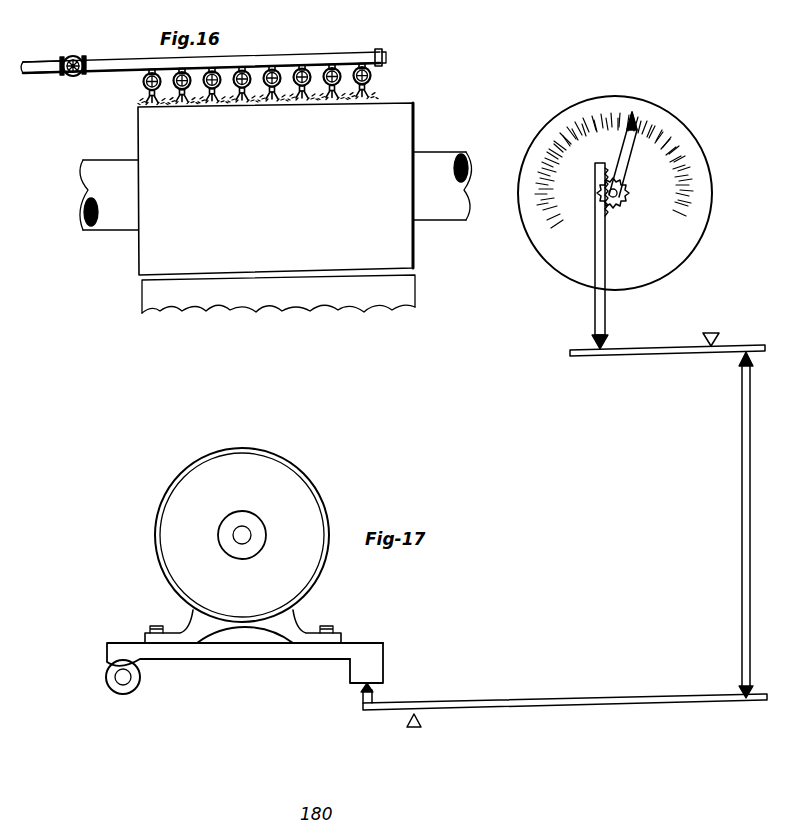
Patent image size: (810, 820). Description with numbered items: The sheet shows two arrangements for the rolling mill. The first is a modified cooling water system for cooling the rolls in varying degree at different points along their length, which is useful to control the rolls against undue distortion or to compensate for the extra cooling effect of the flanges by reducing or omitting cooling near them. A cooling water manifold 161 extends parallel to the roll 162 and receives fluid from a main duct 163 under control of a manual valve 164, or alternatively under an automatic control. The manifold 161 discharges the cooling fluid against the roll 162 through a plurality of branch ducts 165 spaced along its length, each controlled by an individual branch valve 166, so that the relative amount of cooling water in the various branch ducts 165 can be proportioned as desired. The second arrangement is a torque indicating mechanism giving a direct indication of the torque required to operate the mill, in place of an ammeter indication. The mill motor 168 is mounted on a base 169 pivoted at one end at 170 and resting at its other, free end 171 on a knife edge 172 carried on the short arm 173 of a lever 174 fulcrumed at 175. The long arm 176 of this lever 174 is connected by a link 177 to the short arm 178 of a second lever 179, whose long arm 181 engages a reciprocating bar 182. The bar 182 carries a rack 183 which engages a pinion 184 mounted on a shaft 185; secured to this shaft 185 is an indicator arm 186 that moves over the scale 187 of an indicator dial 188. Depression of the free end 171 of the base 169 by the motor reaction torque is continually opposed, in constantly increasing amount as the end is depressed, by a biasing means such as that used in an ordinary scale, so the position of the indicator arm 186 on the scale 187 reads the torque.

In FIG. 16, the cooling water manifold 161 is at (353, 58).
In FIG. 16, the roll 162 is at (395, 137).
In FIG. 16, the main duct 163 is at (38, 62).
In FIG. 16, the manual valve 164 is at (74, 78).
In FIG. 16, the branch ducts 165 is at (150, 70).
In FIG. 16, the branch valve 166 is at (320, 68).
In FIG. 17, the mill motor 168 is at (287, 492).
In FIG. 17, the base 169 is at (193, 657).
In FIG. 17, the pivot 170 is at (123, 680).
In FIG. 17, the free end of base 171 is at (372, 665).
In FIG. 17, the knife edge 172 is at (370, 697).
In FIG. 17, the short arm of lever 173 is at (378, 710).
In FIG. 17, the lever 174 is at (517, 700).
In FIG. 17, the fulcrum 175 is at (414, 728).
In FIG. 17, the long arm of lever 176 is at (623, 707).
In FIG. 17, the link 177 is at (743, 547).
In FIG. 17, the short arm of lever 178 is at (730, 348).
In FIG. 17, the lever 179 is at (682, 366).
In FIG. 17, the long arm of lever 181 is at (628, 357).
In FIG. 17, the reciprocating bar 182 is at (604, 314).
In FIG. 17, the rack 183 is at (595, 192).
In FIG. 17, the pinion 184 is at (625, 199).
In FIG. 17, the shaft 185 is at (617, 199).
In FIG. 17, the indicator arm 186 is at (628, 150).
In FIG. 17, the scale 187 is at (683, 178).
In FIG. 17, the indicator dial 188 is at (653, 93).